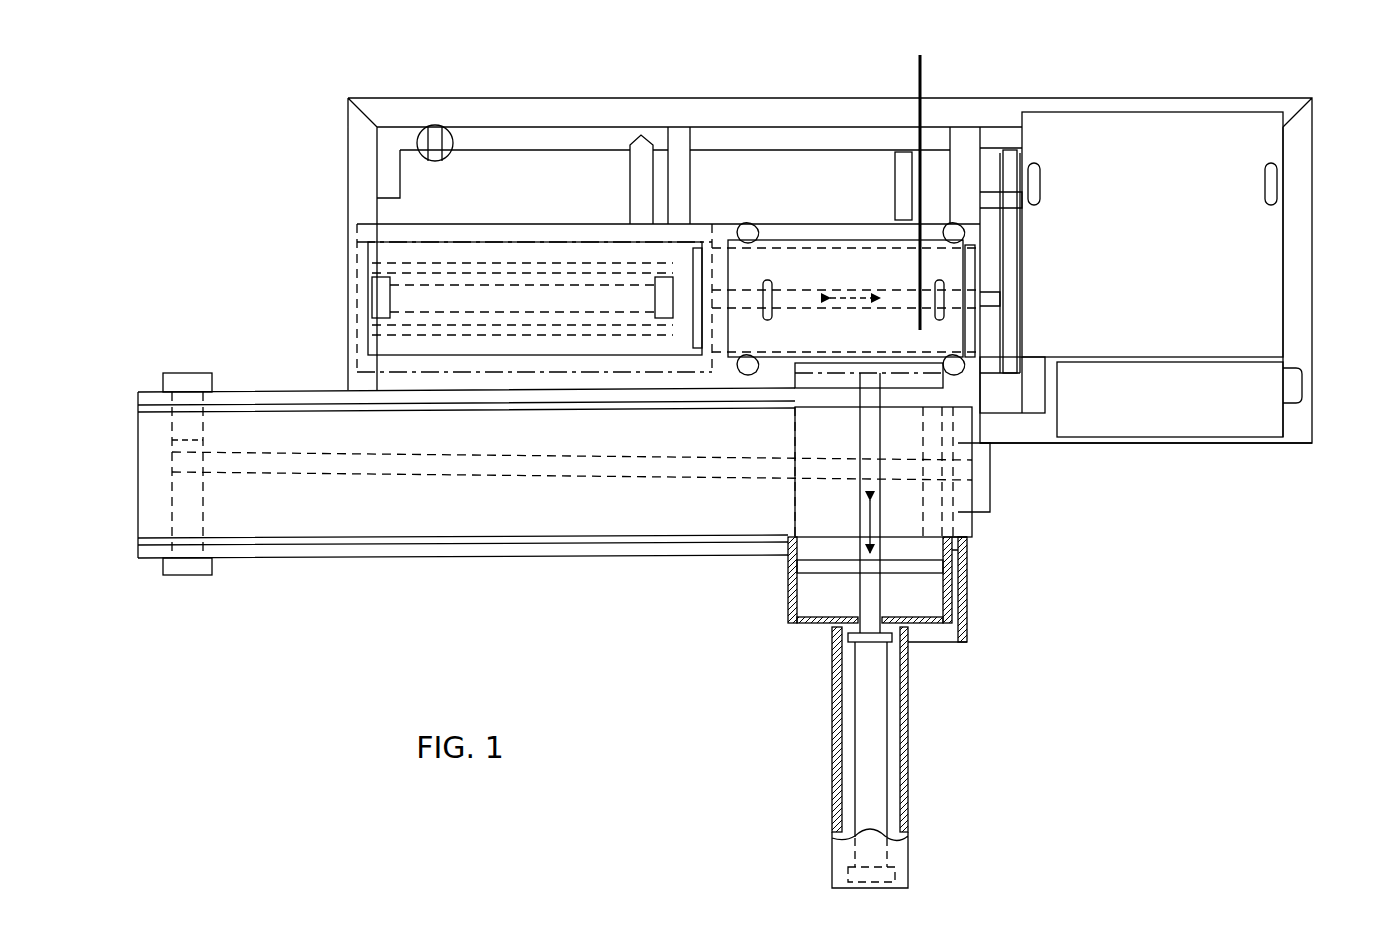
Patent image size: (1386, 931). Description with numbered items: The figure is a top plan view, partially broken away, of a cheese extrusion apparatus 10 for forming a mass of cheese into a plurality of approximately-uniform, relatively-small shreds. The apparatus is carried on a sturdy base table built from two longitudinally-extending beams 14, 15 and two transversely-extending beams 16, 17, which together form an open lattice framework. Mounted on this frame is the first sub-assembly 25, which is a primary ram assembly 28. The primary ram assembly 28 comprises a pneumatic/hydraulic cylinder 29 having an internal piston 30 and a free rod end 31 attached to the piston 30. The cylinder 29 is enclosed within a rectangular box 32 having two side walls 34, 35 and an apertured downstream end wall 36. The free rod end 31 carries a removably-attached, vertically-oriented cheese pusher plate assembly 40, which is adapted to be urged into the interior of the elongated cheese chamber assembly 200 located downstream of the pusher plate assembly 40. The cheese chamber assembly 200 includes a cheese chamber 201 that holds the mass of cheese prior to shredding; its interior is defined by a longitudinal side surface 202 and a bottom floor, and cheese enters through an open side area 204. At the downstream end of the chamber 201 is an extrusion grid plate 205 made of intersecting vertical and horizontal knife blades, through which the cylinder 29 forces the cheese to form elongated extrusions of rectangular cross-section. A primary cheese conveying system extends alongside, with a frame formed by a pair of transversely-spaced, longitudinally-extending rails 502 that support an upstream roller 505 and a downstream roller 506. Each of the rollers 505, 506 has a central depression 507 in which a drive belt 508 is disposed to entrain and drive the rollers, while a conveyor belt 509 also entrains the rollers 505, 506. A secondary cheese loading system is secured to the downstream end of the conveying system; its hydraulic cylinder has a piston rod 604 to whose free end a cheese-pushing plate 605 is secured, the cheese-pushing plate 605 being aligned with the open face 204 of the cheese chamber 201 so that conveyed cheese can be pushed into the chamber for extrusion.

The cheese extrusion apparatus 10 is at (282, 168).
The longitudinally-extending beam 14 is at (945, 97).
The longitudinally-extending beam 15 is at (602, 380).
The transversely-extending beam 16 is at (355, 150).
The transversely-extending beam 17 is at (1302, 175).
The first sub-assembly 25 is at (503, 300).
The primary ram assembly 28 is at (430, 290).
The pneumatic/hydraulic cylinder 29 is at (408, 262).
The internal piston 30 is at (645, 323).
The free rod end 31 is at (800, 290).
The rectangular box 32 is at (365, 268).
The side wall 34 is at (560, 270).
The side wall 35 is at (362, 322).
The apertured downstream end wall 36 is at (710, 262).
The cheese pusher plate assembly 40 is at (1003, 262).
The elongated cheese chamber assembly 200 is at (930, 177).
The cheese chamber 201 is at (850, 273).
The longitudinal side surface 202 is at (882, 243).
The open side area 204 is at (793, 347).
The extrusion grid plate 205 is at (975, 325).
The rails 502 is at (235, 393).
The upstream roller 505 is at (203, 440).
The downstream roller 506 is at (965, 525).
The central depression 507 is at (193, 462).
The drive belt 508 is at (432, 462).
The conveyor belt 509 is at (677, 519).
The piston rod 604 is at (865, 603).
The cheese-pushing plate 605 is at (933, 570).